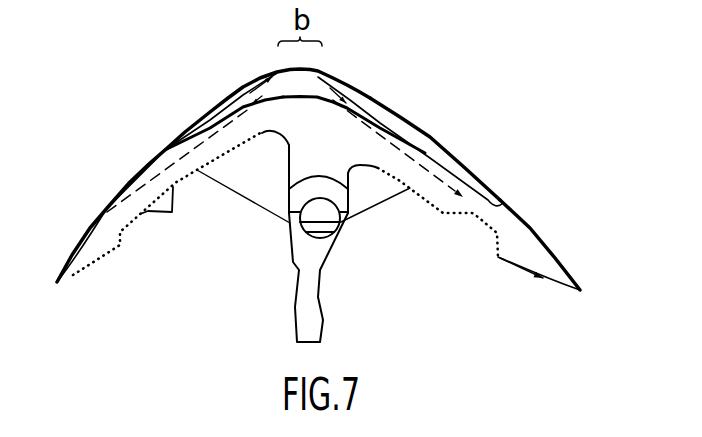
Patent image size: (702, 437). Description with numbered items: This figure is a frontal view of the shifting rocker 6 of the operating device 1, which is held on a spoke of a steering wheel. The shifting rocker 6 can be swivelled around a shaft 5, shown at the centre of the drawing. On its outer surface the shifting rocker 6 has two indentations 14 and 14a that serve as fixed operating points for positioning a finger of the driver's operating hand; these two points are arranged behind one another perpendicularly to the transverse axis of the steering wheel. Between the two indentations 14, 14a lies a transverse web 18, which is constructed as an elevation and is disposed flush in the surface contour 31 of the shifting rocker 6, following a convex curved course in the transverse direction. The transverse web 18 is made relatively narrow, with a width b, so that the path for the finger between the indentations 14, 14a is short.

The operating device 1 is at (192, 107).
The indentation 14 is at (242, 97).
The indentation 14a is at (393, 120).
The transverse web 18 is at (308, 70).
The surface contour 31 is at (432, 133).
The shaft 5 is at (312, 210).
The shifting rocker 6 is at (523, 248).